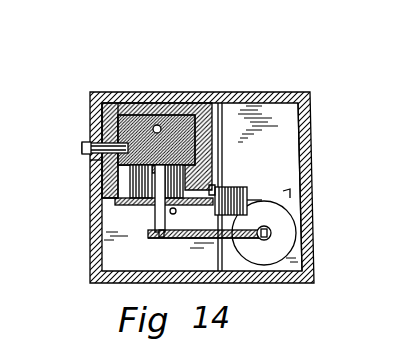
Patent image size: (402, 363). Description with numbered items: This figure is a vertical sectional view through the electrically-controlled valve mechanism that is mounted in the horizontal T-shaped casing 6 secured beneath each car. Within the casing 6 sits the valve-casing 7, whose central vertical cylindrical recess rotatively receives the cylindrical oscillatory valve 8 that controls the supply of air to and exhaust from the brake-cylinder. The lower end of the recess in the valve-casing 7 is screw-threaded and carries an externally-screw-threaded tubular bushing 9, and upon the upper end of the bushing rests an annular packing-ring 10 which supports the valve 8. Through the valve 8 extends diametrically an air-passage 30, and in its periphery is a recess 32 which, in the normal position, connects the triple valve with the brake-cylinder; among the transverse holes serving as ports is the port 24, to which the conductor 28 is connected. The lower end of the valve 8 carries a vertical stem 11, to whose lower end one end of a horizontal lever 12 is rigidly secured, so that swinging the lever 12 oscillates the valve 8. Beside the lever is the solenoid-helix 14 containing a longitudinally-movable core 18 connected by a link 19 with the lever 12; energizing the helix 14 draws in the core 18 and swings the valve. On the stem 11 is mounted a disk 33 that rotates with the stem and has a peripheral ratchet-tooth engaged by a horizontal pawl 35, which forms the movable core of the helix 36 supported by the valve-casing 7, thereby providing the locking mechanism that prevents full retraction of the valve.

The casing 6 is at (291, 93).
The valve-casing 7 is at (137, 108).
The cylindrical oscillatory valve 8 is at (185, 117).
The tubular bushing 9 is at (93, 178).
The annular packing-ring 10 is at (88, 161).
The vertical stem 11 is at (155, 217).
The horizontal lever 12 is at (150, 240).
The solenoid-helix 14 is at (281, 242).
The core 18 is at (262, 228).
The link 19 is at (258, 240).
The port 24 is at (92, 126).
The conductor 28 is at (82, 143).
The air-passage 30 is at (157, 124).
The recess 32 is at (213, 182).
The disk 33 is at (114, 205).
The pawl 35 is at (178, 214).
The helix 36 is at (288, 193).